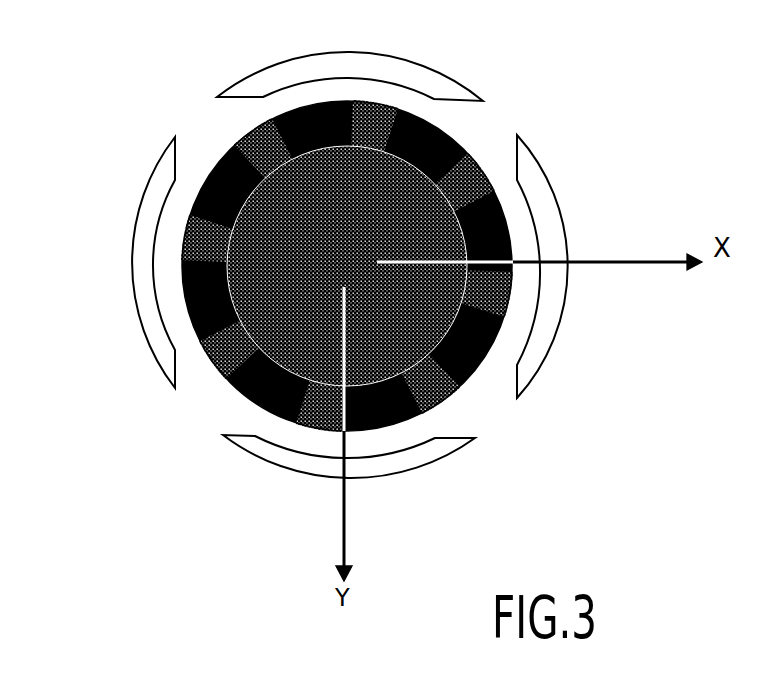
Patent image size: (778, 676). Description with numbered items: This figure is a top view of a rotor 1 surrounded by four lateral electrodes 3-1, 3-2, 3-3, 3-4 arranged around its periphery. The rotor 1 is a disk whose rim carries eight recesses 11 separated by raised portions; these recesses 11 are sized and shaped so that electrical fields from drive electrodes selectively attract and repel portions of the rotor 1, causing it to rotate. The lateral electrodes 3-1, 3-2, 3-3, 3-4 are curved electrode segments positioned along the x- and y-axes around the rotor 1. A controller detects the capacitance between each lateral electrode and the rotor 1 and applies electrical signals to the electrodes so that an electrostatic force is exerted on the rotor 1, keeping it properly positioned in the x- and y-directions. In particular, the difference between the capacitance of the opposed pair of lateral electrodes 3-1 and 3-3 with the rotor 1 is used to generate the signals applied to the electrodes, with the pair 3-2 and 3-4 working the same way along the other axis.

The rotor 1 is at (222, 358).
The recesses 11 is at (478, 357).
The lateral electrode 3-1 is at (553, 320).
The lateral electrode 3-2 is at (403, 70).
The lateral electrode 3-3 is at (150, 350).
The lateral electrode 3-4 is at (397, 463).